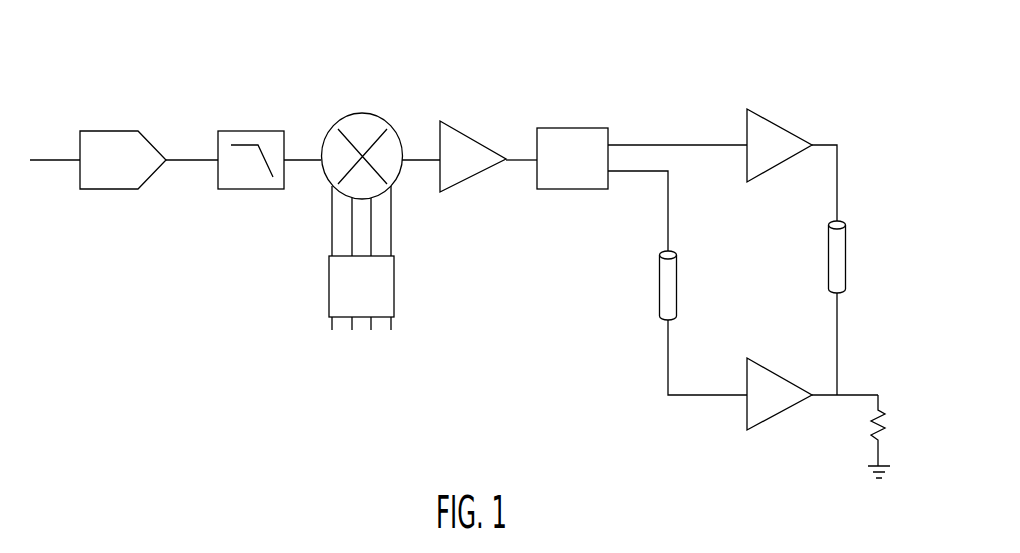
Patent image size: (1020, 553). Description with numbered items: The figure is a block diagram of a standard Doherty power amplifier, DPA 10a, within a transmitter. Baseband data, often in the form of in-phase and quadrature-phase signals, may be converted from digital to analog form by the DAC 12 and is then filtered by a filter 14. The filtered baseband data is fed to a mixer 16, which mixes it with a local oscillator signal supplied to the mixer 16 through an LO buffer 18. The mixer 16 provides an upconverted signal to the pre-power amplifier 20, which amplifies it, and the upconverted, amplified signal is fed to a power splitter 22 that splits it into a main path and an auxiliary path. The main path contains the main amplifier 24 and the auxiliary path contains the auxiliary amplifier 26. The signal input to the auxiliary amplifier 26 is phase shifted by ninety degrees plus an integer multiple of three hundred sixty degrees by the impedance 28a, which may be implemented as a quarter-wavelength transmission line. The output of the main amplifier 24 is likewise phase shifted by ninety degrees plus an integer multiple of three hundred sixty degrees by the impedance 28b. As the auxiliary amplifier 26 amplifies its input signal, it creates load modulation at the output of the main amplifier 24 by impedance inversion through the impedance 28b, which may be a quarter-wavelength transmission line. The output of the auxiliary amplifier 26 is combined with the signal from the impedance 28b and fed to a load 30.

The DPA 10a is at (416, 29).
The DAC 12 is at (153, 145).
The filter 14 is at (285, 142).
The mixer 16 is at (401, 146).
The LO buffer 18 is at (395, 278).
The pre-power amplifier 20 is at (484, 145).
The power splitter 22 is at (608, 135).
The main amplifier 24 is at (785, 129).
The auxiliary amplifier 26 is at (786, 379).
The impedance 28a is at (732, 257).
The impedance 28b is at (905, 252).
The load 30 is at (917, 432).